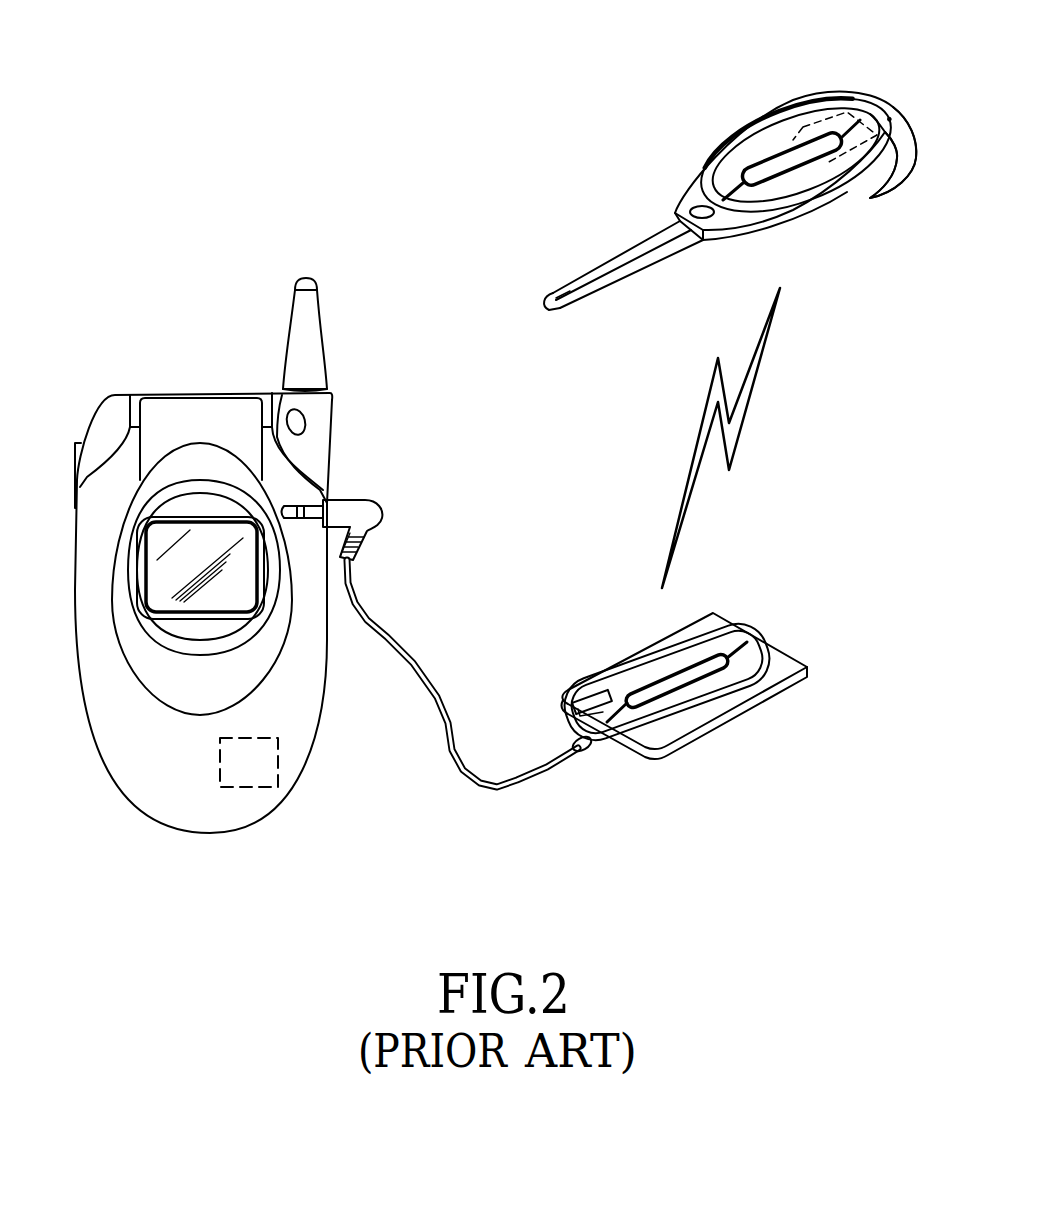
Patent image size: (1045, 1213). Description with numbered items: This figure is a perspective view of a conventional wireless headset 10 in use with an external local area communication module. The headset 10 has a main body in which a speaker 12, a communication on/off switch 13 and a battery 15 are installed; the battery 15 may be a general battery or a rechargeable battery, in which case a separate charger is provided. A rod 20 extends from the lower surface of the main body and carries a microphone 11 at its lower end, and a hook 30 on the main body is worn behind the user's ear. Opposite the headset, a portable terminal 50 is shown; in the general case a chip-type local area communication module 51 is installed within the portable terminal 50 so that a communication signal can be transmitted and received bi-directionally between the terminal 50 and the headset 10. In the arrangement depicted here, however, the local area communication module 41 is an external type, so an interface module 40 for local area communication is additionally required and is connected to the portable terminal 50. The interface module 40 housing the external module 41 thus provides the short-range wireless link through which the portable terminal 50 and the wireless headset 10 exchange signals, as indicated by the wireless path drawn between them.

The wireless headset 10 is at (692, 174).
The microphone 11 is at (545, 295).
The speaker 12 is at (688, 197).
The communication on/off switch 13 is at (790, 168).
The rechargeable battery 15 is at (848, 113).
The rod 20 is at (584, 243).
The hook 30 is at (887, 195).
The interface module 40 is at (665, 697).
The local area communication module 41 is at (583, 703).
The portable terminal 50 is at (193, 392).
The local area communication module 51 is at (247, 778).